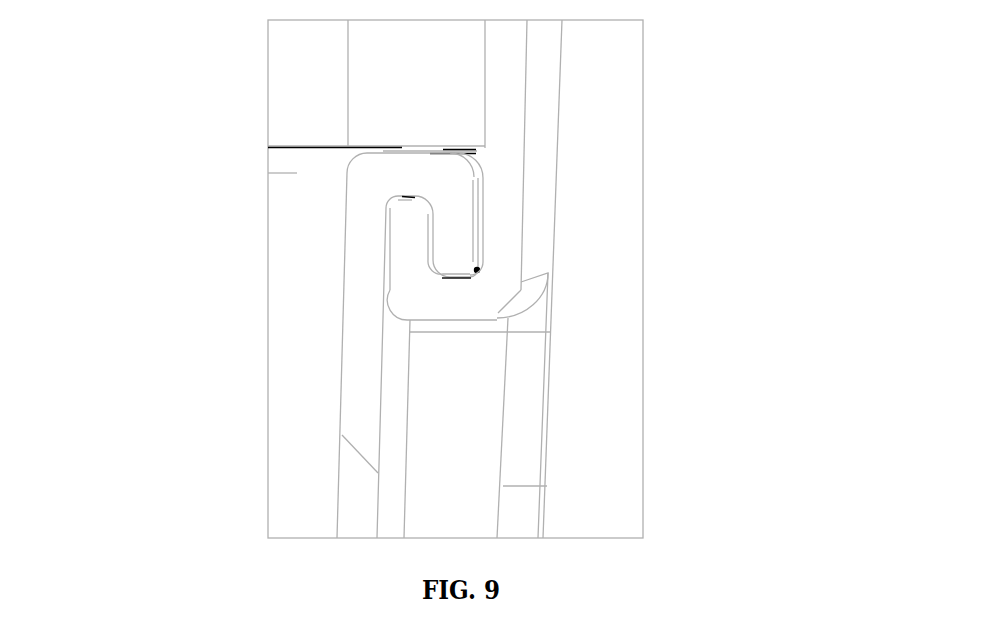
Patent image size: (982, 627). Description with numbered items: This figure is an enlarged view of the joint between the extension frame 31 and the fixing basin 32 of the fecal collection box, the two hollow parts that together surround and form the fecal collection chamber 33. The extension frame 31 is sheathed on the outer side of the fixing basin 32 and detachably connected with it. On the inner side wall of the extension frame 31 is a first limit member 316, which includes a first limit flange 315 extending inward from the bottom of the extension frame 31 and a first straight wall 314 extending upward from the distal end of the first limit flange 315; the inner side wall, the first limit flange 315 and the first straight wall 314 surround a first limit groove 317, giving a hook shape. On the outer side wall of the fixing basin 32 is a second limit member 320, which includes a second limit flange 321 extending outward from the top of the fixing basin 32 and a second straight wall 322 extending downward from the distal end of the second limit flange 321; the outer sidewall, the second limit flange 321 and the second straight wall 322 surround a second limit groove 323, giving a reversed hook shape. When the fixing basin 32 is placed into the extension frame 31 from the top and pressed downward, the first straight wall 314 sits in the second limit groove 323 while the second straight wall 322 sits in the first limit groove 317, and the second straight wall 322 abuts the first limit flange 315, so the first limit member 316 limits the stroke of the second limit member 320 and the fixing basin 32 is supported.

The extension frame 31 is at (538, 90).
The fixing basin 32 is at (358, 502).
The fecal collection chamber 33 is at (305, 338).
The first straight wall 314 is at (412, 242).
The first limit flange 315 is at (452, 307).
The first limit member 316 is at (778, 323).
The first limit groove 317 is at (497, 233).
The second limit member 320 is at (148, 98).
The second limit flange 321 is at (410, 173).
The second straight wall 322 is at (457, 237).
The second limit groove 323 is at (362, 241).